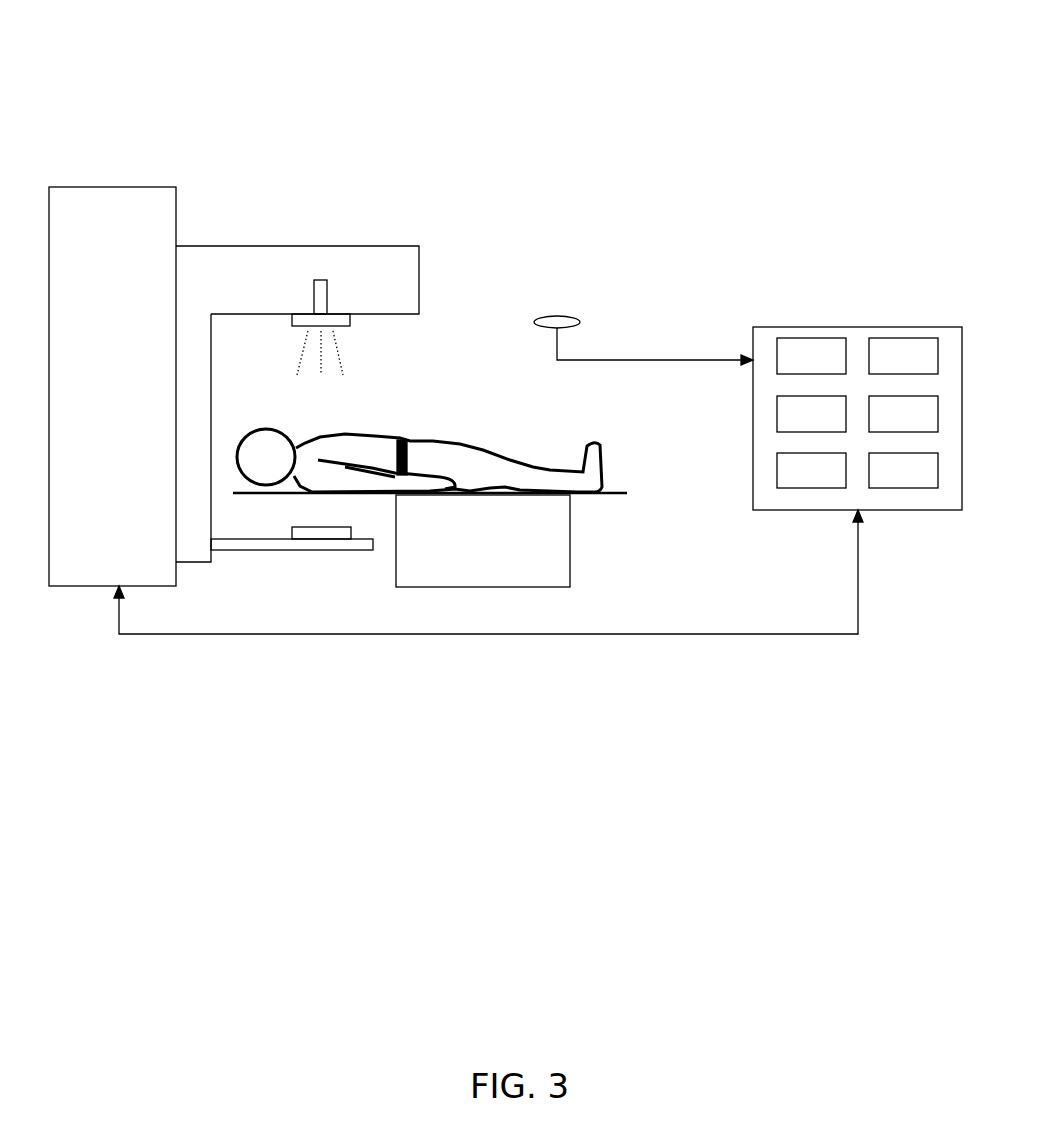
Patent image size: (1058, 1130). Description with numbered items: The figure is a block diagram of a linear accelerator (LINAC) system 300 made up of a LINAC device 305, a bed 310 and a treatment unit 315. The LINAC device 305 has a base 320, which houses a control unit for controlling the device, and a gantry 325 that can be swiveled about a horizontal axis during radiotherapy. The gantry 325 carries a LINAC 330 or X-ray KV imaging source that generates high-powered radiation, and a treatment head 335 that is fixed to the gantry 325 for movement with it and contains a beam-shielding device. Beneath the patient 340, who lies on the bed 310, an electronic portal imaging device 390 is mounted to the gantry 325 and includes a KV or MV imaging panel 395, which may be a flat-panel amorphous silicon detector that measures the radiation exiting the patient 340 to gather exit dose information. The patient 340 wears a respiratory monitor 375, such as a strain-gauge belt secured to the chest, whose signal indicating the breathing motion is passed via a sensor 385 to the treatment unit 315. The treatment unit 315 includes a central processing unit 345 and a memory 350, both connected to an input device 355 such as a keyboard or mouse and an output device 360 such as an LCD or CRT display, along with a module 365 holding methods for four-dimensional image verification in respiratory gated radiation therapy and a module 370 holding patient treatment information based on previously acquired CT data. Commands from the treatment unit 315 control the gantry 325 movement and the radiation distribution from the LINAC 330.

The linear accelerator (LINAC) system 300 is at (511, 63).
The LINAC device 305 is at (269, 157).
The bed 310 is at (571, 560).
The treatment unit 315 is at (857, 394).
The base 320 is at (143, 183).
The gantry 325 is at (270, 243).
The LINAC 330 is at (327, 298).
The treatment head 335 is at (292, 327).
The patient 340 is at (550, 468).
The central processing unit (CPU) 345 is at (811, 356).
The memory 350 is at (903, 356).
The input device 355 is at (811, 414).
The output device 360 is at (903, 414).
The module 365 is at (811, 470).
The module 370 is at (903, 470).
The respiratory monitor 375 is at (411, 435).
The sensor 385 is at (570, 315).
The electronic portal imaging device 390 is at (235, 552).
The imaging panel 395 is at (315, 542).